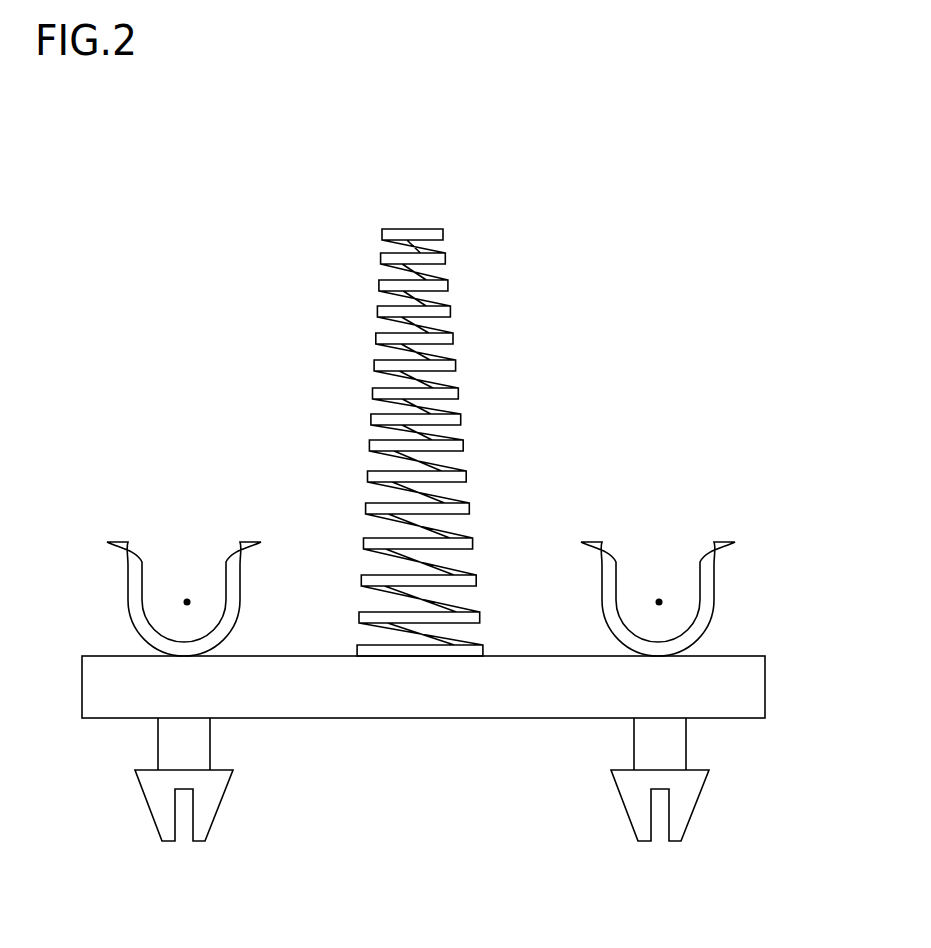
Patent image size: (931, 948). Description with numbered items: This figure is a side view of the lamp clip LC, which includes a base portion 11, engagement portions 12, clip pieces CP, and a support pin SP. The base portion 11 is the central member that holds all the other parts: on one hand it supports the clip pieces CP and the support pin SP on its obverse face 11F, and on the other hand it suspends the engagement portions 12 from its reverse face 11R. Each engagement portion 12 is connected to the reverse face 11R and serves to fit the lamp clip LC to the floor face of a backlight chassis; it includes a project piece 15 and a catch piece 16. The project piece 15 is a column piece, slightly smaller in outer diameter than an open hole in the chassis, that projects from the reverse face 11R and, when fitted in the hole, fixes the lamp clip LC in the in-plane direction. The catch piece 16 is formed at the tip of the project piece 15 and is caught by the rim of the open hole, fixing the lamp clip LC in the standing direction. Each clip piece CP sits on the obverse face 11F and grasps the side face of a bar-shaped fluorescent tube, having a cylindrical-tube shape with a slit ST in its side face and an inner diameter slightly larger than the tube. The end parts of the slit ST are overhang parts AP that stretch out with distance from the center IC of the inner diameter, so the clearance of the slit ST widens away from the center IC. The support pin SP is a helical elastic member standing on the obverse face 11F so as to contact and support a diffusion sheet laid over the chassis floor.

The lamp clip LC is at (668, 230).
The support pin SP is at (503, 228).
The clip piece CP is at (318, 504).
The slit ST is at (228, 546).
The center of the inner diameter of the clip piece IC is at (187, 602).
The overhang part AP is at (122, 551).
The base portion 11 is at (66, 615).
The obverse face 11F is at (127, 656).
The reverse face 11R is at (127, 723).
The engagement portion 12 is at (422, 782).
The project piece 15 is at (422, 744).
The catch piece 16 is at (422, 805).